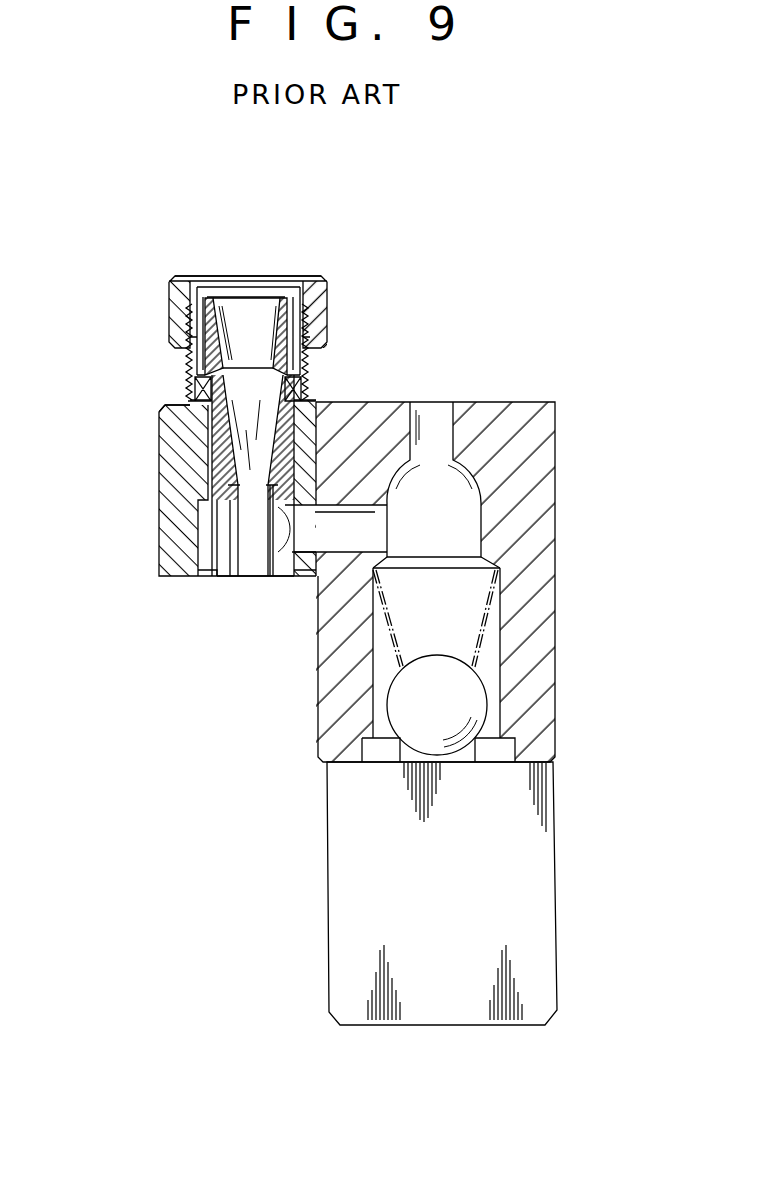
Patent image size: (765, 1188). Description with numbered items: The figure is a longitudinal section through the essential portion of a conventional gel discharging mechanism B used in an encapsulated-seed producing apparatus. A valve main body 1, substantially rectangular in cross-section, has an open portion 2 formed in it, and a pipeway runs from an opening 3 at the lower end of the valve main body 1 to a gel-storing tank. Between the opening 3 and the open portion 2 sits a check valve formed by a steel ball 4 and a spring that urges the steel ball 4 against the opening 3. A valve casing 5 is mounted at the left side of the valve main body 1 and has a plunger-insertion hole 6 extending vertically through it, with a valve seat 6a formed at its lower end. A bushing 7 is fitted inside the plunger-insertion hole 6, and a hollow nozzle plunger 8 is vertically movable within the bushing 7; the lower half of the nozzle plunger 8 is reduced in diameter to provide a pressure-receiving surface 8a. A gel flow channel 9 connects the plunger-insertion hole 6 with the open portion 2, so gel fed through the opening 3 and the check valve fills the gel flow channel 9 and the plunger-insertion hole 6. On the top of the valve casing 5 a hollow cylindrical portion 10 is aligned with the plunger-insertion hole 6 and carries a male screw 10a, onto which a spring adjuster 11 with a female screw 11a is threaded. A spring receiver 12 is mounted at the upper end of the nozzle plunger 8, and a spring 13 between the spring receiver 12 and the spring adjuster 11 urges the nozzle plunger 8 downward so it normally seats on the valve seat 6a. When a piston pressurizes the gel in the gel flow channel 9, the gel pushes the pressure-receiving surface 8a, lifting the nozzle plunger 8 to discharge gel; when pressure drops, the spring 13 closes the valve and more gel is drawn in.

The gel discharging mechanism B is at (572, 343).
The valve main body 1 is at (540, 427).
The open portion 2 is at (465, 500).
The opening 3 is at (467, 758).
The steel ball 4 is at (472, 702).
The valve casing 5 is at (180, 452).
The plunger-insertion hole 6 is at (315, 437).
The valve seat 6a is at (218, 555).
The bushing 7 is at (207, 427).
The nozzle plunger 8 is at (223, 483).
The pressure-receiving surface 8a is at (290, 570).
The gel flow channel 9 is at (362, 515).
The cylindrical portion 10 is at (185, 337).
The male screw 10a is at (188, 376).
The spring adjuster 11 is at (189, 290).
The female screw 11a is at (187, 292).
The spring receiver 12 is at (300, 322).
The spring 13 is at (292, 275).